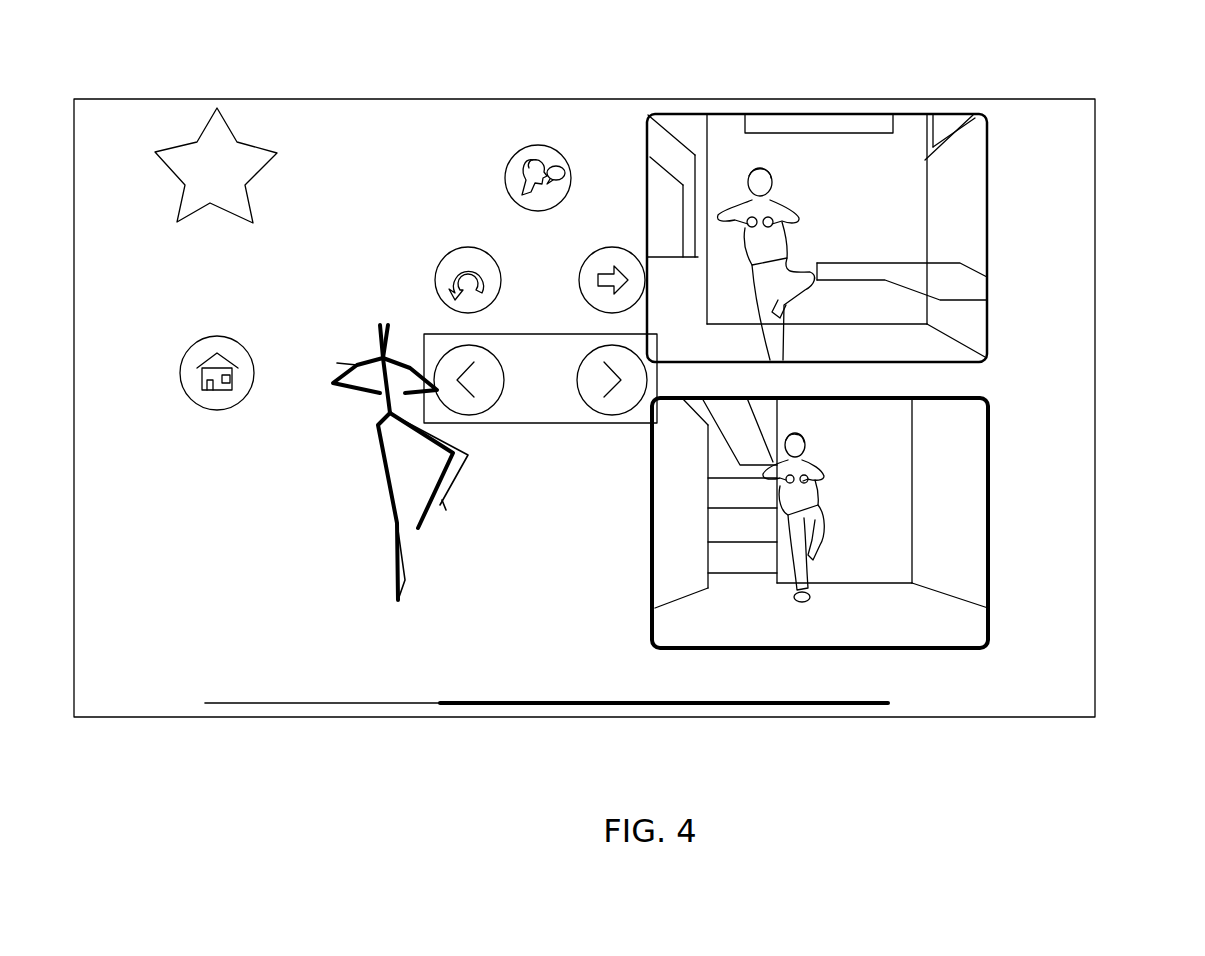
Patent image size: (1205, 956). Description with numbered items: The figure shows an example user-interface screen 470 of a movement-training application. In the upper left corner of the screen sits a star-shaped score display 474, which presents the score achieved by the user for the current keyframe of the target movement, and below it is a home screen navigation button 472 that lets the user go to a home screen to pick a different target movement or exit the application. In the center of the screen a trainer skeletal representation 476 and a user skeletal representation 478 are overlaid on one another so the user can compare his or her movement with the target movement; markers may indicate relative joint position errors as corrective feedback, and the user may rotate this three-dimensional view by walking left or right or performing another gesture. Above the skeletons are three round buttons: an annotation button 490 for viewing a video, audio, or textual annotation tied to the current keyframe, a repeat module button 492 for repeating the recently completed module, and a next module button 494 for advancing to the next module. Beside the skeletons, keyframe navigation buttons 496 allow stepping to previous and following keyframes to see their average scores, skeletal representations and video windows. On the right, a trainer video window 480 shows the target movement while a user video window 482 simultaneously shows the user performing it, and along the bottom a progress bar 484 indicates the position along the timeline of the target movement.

The user-interface screen 470 is at (137, 99).
The home screen navigation button 472 is at (217, 336).
The score display 474 is at (226, 128).
The trainer skeletal representation 476 is at (447, 490).
The user skeletal representation 478 is at (357, 390).
The trainer video window 480 is at (987, 197).
The user video window 482 is at (988, 466).
The progress bar 484 is at (508, 705).
The annotation button 490 is at (540, 145).
The repeat module button 492 is at (468, 247).
The next module button 494 is at (612, 247).
The keyframe navigation buttons 496 is at (537, 334).